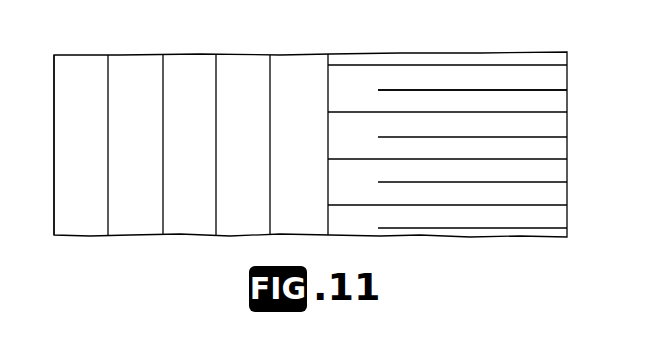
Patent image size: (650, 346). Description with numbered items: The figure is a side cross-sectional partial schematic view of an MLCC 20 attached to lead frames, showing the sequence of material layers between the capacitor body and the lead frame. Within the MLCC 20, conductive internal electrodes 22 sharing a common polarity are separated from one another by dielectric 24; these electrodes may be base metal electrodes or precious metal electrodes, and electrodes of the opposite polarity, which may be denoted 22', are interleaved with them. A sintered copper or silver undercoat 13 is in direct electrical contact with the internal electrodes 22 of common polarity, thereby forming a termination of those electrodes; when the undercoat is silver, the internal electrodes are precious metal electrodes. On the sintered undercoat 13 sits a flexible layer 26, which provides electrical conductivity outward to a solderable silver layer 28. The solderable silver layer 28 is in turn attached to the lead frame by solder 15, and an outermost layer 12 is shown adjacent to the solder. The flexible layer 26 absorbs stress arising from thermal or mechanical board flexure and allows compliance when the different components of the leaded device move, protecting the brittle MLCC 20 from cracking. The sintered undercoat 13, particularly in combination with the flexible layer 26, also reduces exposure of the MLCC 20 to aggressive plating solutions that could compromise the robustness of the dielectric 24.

The first layer 12 is at (87, 55).
The solder 15 is at (141, 55).
The solderable silver layer 28 is at (197, 55).
The flexible layer 26 is at (252, 54).
The sintered copper or silver undercoat 13 is at (304, 54).
The conductive internal electrodes 22 is at (447, 132).
The dielectric 24 is at (428, 77).
The counter electrode 22' is at (472, 59).
The MLCC 20 is at (505, 265).